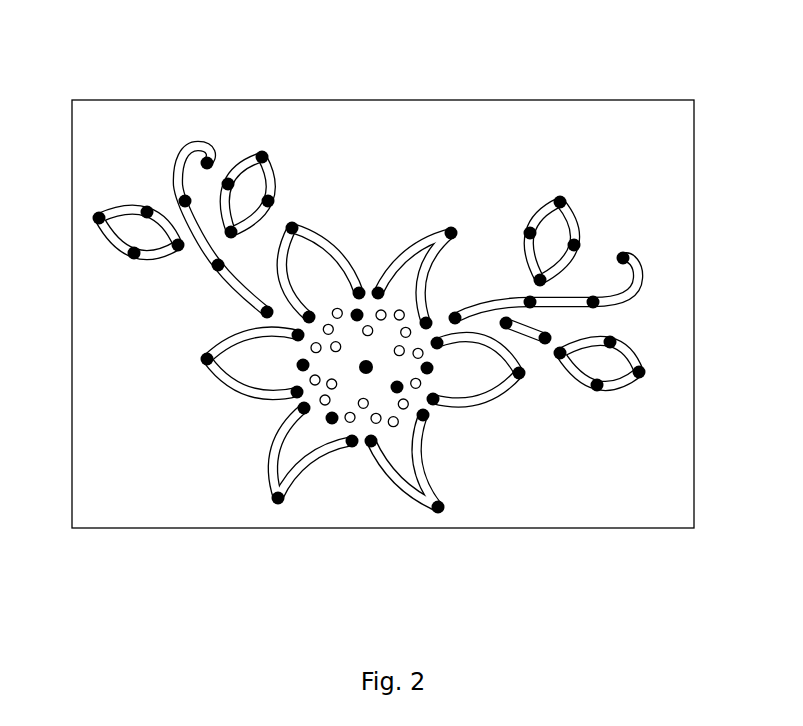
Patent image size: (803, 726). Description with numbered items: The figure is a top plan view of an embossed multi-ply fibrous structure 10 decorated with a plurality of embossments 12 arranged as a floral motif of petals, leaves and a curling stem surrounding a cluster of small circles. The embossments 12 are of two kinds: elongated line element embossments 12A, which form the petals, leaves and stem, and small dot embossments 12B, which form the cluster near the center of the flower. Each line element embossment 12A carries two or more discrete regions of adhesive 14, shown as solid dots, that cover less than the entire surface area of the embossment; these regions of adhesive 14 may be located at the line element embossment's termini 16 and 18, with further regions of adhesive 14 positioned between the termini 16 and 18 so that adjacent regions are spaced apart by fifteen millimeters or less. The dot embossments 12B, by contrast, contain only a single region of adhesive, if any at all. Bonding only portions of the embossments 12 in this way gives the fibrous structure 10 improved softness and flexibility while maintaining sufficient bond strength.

The embossed multi-ply fibrous structure 10 is at (590, 75).
The embossment 12 is at (277, 165).
The line element embossment 12A is at (178, 163).
The dot embossment 12B is at (400, 312).
The discrete region of adhesive 14 is at (207, 163).
The terminus of line element embossment 16 is at (231, 144).
The terminus of line element embossment 18 is at (235, 323).